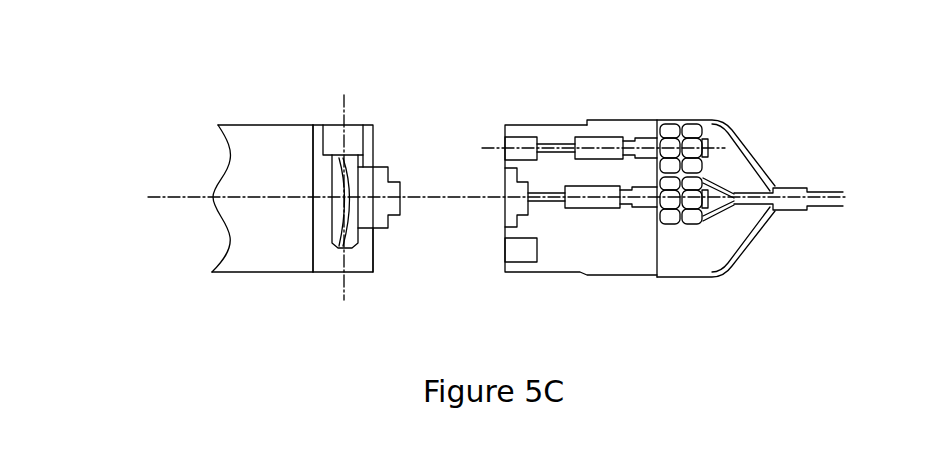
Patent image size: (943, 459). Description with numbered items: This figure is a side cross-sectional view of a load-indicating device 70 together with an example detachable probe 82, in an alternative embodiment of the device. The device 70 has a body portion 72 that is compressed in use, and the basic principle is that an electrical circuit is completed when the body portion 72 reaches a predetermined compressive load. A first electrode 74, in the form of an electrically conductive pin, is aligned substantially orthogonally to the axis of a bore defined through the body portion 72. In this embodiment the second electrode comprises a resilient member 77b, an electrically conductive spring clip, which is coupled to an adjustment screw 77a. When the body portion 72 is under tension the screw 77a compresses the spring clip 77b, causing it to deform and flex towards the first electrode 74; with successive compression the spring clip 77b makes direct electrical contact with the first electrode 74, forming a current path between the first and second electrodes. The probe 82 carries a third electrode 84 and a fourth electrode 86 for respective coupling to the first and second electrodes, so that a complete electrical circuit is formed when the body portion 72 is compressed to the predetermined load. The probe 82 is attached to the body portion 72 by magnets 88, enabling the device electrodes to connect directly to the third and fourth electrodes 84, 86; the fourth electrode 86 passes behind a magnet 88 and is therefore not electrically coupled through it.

The load-indicating device 70 is at (274, 115).
The body portion 72 is at (316, 245).
The first electrode 74 is at (382, 220).
The adjustment screw 77a is at (353, 138).
The resilient member 77b is at (343, 247).
The detachable probe 82 is at (685, 106).
The third electrode 84 is at (552, 197).
The fourth electrode 86 is at (552, 142).
The magnets 88 is at (520, 142).